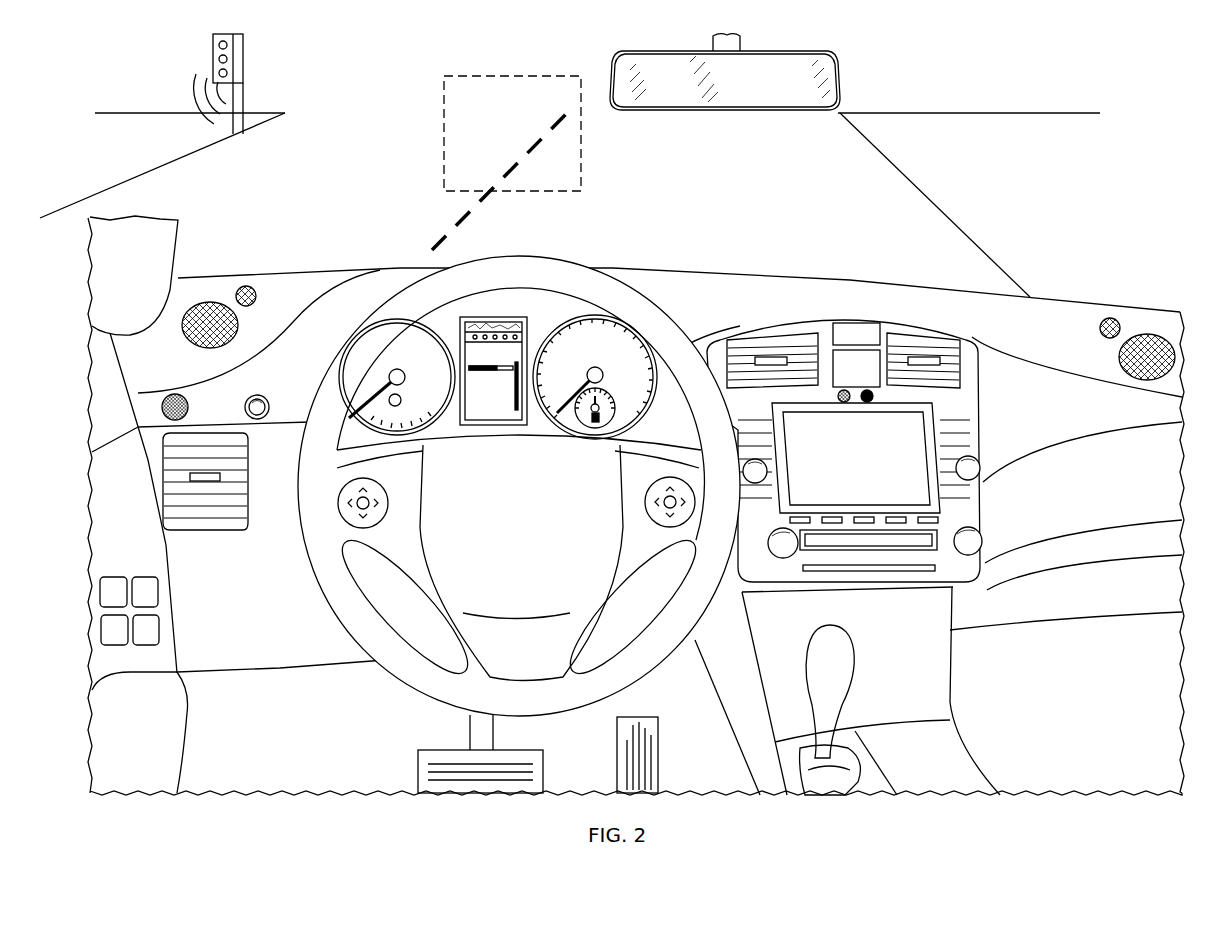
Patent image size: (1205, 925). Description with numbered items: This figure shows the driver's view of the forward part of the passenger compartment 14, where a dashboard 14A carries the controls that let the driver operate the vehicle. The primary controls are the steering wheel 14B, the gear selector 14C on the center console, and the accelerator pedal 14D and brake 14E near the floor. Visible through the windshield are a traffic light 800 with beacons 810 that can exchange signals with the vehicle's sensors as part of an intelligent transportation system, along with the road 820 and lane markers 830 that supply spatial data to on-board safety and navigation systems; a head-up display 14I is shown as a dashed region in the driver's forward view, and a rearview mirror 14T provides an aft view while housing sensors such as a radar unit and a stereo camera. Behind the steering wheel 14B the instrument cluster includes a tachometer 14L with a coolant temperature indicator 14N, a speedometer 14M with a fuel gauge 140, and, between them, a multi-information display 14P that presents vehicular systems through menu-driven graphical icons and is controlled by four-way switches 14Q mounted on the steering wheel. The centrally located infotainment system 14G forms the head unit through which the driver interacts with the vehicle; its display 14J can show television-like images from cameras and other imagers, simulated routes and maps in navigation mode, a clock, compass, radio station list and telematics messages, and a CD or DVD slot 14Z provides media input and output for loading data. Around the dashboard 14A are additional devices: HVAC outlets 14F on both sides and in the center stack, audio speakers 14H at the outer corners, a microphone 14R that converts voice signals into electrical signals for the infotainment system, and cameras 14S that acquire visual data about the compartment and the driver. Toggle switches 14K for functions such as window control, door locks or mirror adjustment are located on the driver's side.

The passenger compartment 14 is at (338, 244).
The traffic light 800 is at (244, 64).
The beacons 810 is at (244, 107).
The road 820 is at (155, 182).
The lane markers 830 is at (505, 178).
The display 14I is at (444, 130).
The rearview mirror 14T is at (752, 112).
The dashboard 14A is at (248, 614).
The audio speakers 14H is at (226, 295).
The microphone 14R is at (174, 394).
The cameras 14S is at (257, 394).
The HVAC outlets 14F is at (165, 470).
The toggle switches 14K is at (99, 590).
The steering wheel 14B is at (543, 531).
The four-way switches 14Q is at (390, 505).
The tachometer 14L is at (432, 322).
The coolant temperature gauge 14N is at (404, 392).
The multi-information display 14P is at (490, 317).
The speedometer 14M is at (575, 330).
The fuel gauge 140 is at (613, 393).
The infotainment system 14G is at (917, 453).
The display 14J is at (876, 469).
The CD or DVD slot 14Z is at (810, 574).
The gear selector 14C is at (859, 655).
The brake 14E is at (418, 768).
The accelerator pedal 14D is at (659, 763).